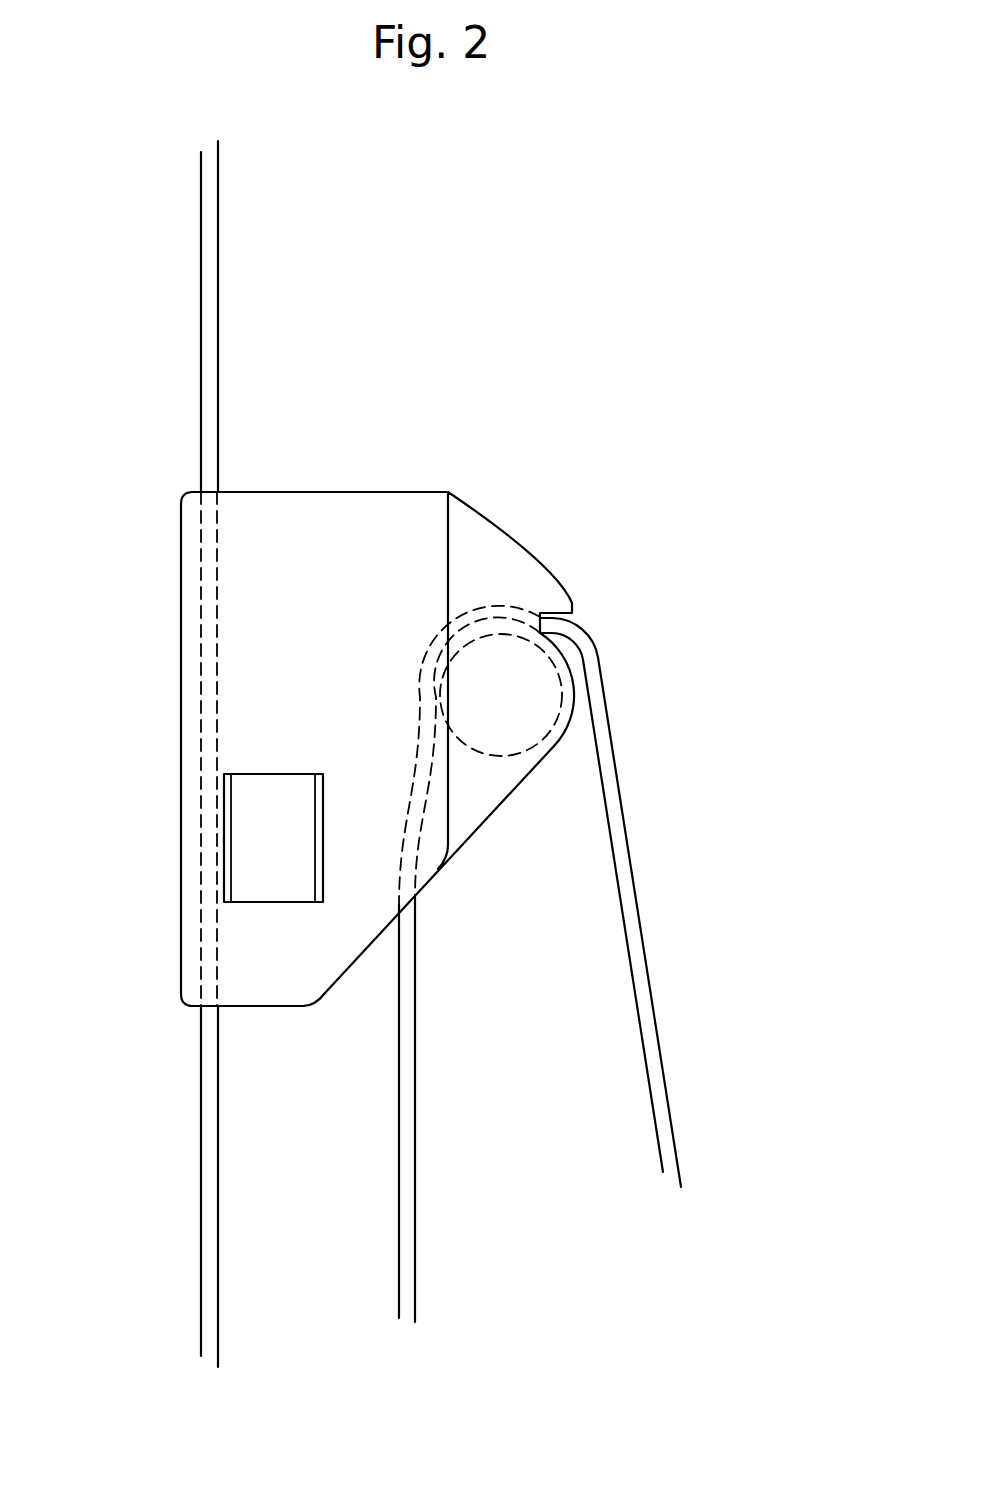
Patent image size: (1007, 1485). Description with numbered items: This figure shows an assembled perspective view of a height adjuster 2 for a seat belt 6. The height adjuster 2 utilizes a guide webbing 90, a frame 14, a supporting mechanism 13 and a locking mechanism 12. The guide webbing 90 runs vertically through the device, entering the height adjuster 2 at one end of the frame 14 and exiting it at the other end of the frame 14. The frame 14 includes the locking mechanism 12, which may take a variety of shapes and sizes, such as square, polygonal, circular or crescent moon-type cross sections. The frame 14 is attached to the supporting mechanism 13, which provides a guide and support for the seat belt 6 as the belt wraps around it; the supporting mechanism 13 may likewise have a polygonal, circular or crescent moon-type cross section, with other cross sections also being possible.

The height adjuster 2 is at (494, 428).
The seat belt 6 is at (643, 942).
The locking mechanism 12 is at (272, 902).
The supporting mechanism 13 is at (498, 757).
The frame 14 is at (180, 672).
The guide webbing 90 is at (200, 373).